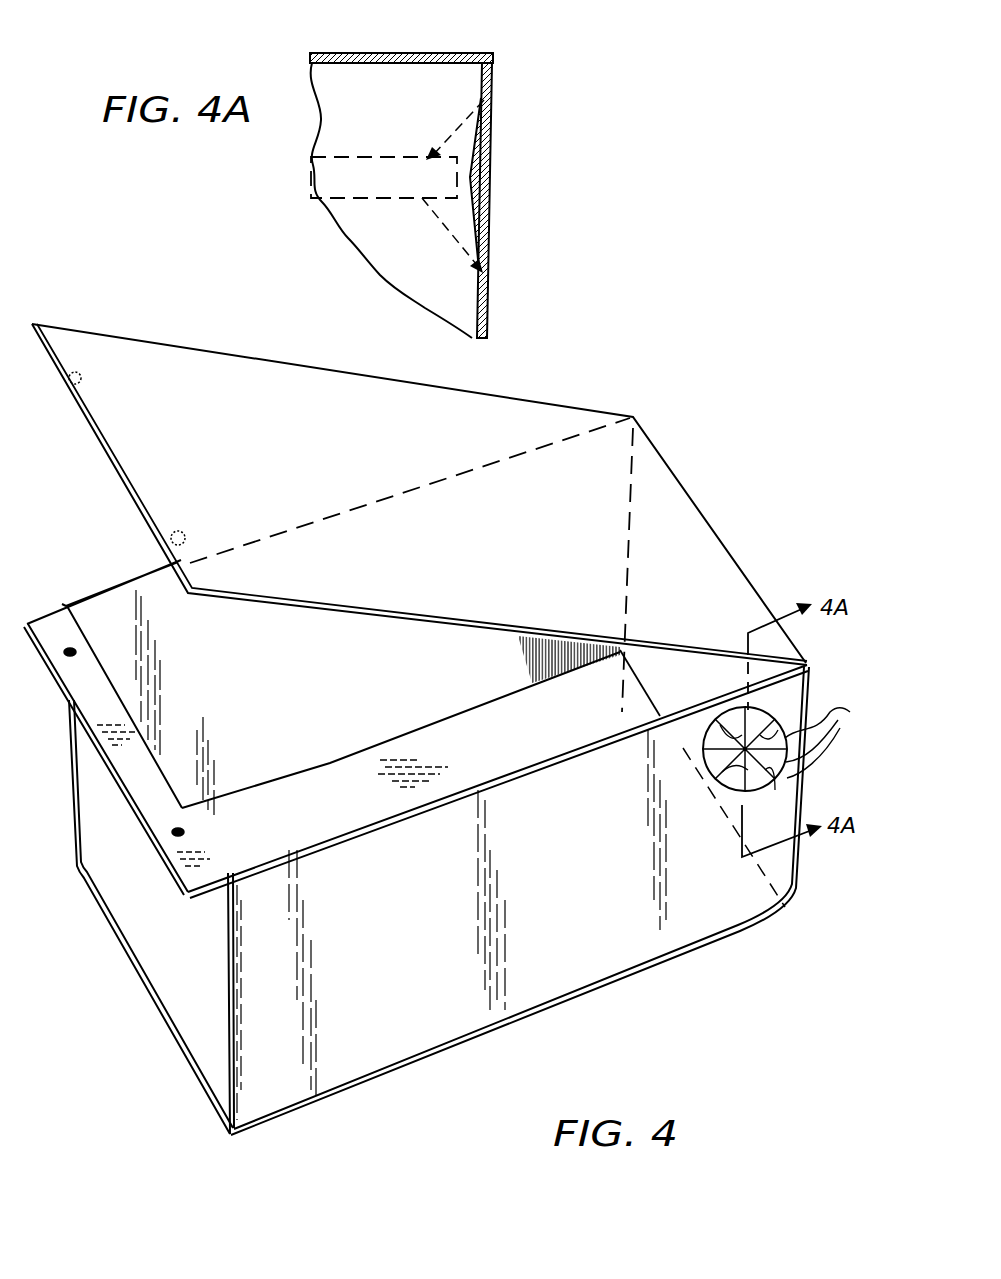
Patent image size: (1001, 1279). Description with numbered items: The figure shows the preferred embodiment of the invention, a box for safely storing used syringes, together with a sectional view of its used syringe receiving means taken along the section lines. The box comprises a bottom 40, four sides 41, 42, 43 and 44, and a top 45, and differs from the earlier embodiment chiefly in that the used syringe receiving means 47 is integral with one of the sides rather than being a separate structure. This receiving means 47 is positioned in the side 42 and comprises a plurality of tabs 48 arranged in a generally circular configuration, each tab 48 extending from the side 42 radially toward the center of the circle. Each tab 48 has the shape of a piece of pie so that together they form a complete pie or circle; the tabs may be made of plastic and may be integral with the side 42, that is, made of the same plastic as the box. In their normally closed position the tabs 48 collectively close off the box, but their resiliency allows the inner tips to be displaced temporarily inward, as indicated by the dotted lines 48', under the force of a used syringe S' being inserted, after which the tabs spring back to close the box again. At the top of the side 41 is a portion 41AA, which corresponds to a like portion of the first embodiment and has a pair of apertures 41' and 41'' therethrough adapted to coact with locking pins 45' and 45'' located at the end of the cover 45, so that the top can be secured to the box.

In FIG. 4, the bottom 40 is at (490, 727).
In FIG. 4, the side 41 is at (151, 917).
In FIG. 4, the aperture 41' is at (224, 792).
In FIG. 4, the aperture 41'' is at (100, 635).
In FIG. 4, the portion 41AA is at (138, 777).
In FIG. 4A, the side 42 is at (489, 316).
In FIG. 4, the side 42 is at (347, 1050).
In FIG. 4A, the side 43 is at (319, 212).
In FIG. 4, the side 43 is at (667, 680).
In FIG. 4, the side 44 is at (352, 720).
In FIG. 4A, the top 45 is at (401, 37).
In FIG. 4, the top 45 is at (419, 515).
In FIG. 4, the locking pin 45' is at (225, 520).
In FIG. 4, the locking pin 45'' is at (123, 381).
In FIG. 4A, the used syringe receiving means 47 is at (505, 159).
In FIG. 4, the used syringe receiving means 47 is at (722, 806).
In FIG. 4A, the tab 48 is at (438, 186).
In FIG. 4, the tab 48 is at (776, 752).
In FIG. 4A, the dotted lines 48' is at (384, 177).
In FIG. 4A, the used syringe S' is at (342, 129).